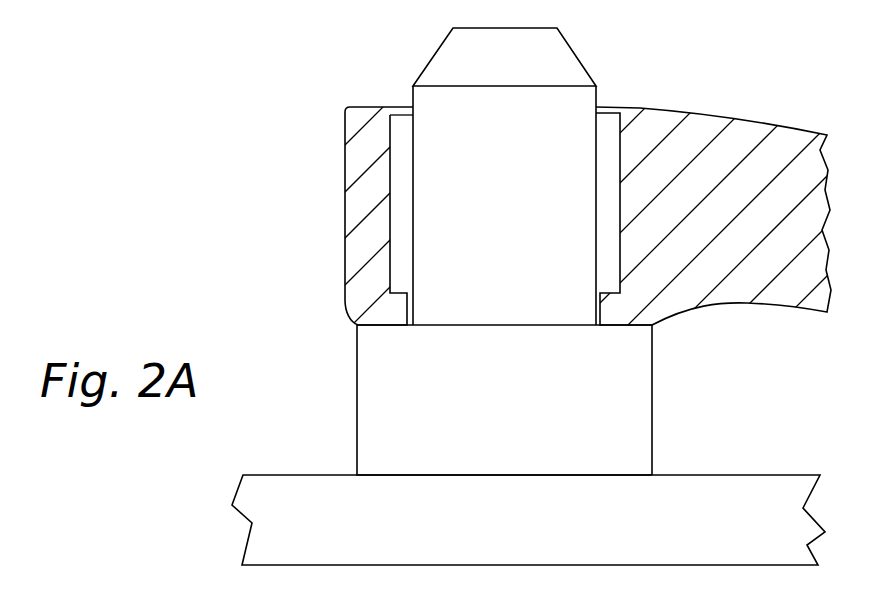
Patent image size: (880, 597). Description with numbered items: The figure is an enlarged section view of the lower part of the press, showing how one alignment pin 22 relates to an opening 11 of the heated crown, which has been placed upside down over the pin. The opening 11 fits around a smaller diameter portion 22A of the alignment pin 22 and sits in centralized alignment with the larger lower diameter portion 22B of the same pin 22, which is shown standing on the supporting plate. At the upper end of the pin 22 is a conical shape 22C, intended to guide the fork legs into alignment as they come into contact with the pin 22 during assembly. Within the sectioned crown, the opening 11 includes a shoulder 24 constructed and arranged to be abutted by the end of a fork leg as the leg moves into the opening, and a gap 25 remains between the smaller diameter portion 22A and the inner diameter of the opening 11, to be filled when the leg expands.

The opening 11 is at (620, 252).
The alignment pin 22 is at (518, 410).
The smaller diameter portion 22A is at (596, 192).
The larger lower diameter portion 22B is at (653, 397).
The conical shape 22C is at (547, 52).
The shoulder 24 is at (405, 293).
The gap 25 is at (402, 127).